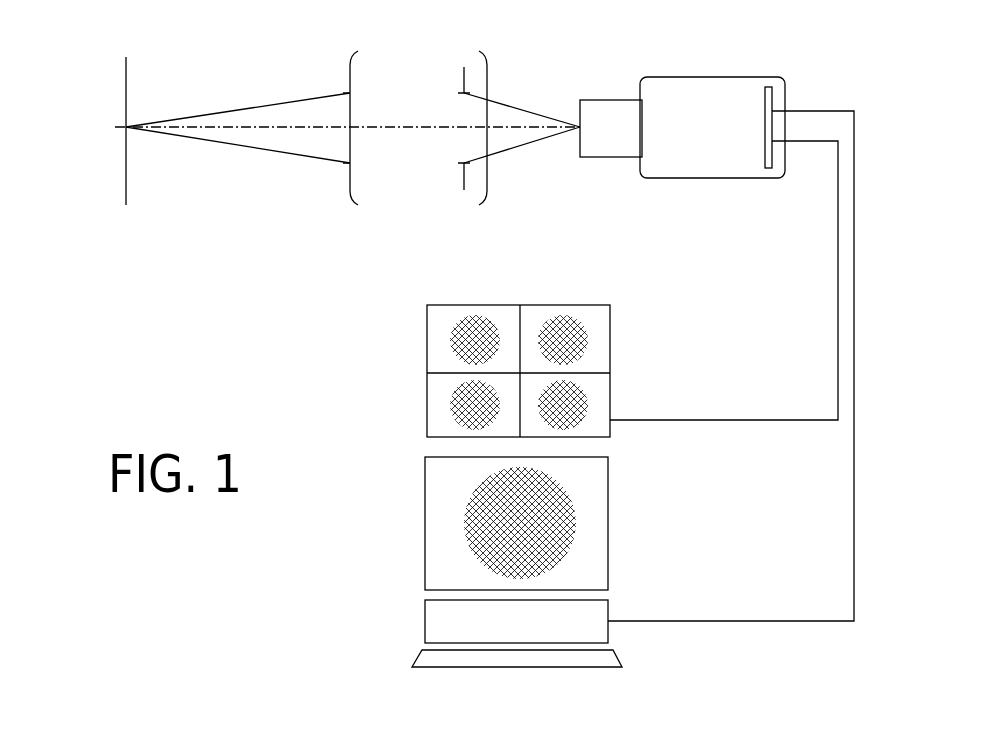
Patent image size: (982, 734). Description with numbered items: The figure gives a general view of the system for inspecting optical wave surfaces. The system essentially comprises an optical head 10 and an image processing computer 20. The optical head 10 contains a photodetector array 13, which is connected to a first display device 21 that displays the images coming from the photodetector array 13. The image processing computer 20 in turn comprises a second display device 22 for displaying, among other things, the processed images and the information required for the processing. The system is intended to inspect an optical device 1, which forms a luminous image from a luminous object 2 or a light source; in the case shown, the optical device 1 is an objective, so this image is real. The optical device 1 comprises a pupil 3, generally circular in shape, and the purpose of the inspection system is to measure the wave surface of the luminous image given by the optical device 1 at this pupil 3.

The optical device 1 is at (413, 197).
The luminous object 2 is at (126, 205).
The pupil 3 is at (462, 195).
The optical head 10 is at (705, 170).
The photodetector array 13 is at (770, 172).
The image processing computer 20 is at (425, 622).
The first display device 21 is at (610, 333).
The second display device 22 is at (608, 520).